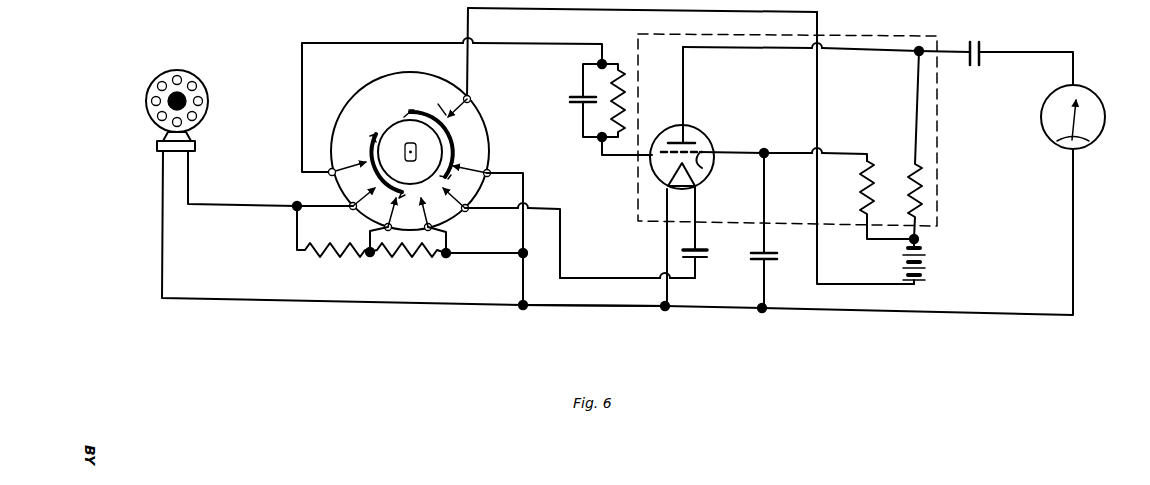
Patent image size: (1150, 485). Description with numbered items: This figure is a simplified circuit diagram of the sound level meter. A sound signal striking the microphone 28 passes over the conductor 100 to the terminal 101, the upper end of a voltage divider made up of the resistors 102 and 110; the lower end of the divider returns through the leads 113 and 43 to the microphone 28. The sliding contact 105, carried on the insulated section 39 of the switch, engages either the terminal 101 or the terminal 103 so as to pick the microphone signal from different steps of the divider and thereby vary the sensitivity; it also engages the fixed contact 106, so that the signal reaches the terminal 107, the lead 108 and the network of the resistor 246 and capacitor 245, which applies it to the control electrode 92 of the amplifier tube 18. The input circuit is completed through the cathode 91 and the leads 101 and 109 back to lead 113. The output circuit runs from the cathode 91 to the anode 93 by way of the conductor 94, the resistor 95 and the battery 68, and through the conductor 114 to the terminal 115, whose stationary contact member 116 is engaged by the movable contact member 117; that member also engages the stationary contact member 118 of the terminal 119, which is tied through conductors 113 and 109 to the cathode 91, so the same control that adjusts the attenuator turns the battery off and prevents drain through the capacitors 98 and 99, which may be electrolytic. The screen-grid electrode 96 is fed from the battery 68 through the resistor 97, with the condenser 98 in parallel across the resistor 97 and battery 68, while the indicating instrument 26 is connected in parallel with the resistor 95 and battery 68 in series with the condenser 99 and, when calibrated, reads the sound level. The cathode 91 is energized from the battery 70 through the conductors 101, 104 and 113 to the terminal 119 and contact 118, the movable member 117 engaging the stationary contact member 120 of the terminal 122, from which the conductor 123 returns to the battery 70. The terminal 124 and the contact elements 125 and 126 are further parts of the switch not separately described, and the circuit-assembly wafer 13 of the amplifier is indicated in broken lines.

The microphone 28 is at (180, 70).
The conductor 100 is at (188, 182).
The lead 43 is at (162, 190).
The lead 108 is at (352, 44).
The insulated section of the switch 39 is at (387, 124).
The sliding contact member 105 is at (404, 170).
The fixed contact 106 is at (368, 166).
The movable contact member 117 is at (446, 121).
The terminal 107 is at (330, 170).
The terminal 115 is at (471, 100).
The stationary contact member 116 is at (429, 101).
The terminal 119 is at (491, 172).
The stationary contact member 118 is at (463, 165).
The terminal 122 is at (470, 208).
The stationary contact member 120 is at (461, 193).
The terminal 101 is at (345, 205).
The contact arrow 125 is at (356, 187).
The terminal 103 is at (384, 229).
The conductor 104 is at (397, 230).
The terminal 124 is at (440, 228).
The contact arrow 126 is at (421, 201).
The resistor 102 is at (333, 258).
The resistor 110 is at (413, 258).
The lead 113 is at (523, 281).
The conductor 123 is at (560, 248).
The lead 109 is at (590, 308).
The capacitor 245 is at (576, 113).
The resistor 246 is at (621, 107).
The circuit-assembly wafer 13 is at (877, 37).
The amplifier tube 18 is at (696, 136).
The anode 93 is at (674, 140).
The screen-grid electrode 96 is at (700, 144).
The control electrode 92 is at (705, 160).
The cathode 91 is at (698, 181).
The battery 70 is at (700, 248).
The condenser 98 is at (765, 249).
The conductor 94 is at (887, 52).
The conductor 114 is at (817, 255).
The resistor 97 is at (860, 182).
The resistor 95 is at (923, 187).
The battery 68 is at (925, 268).
The condenser 99 is at (979, 50).
The indicating instrument 26 is at (1105, 120).